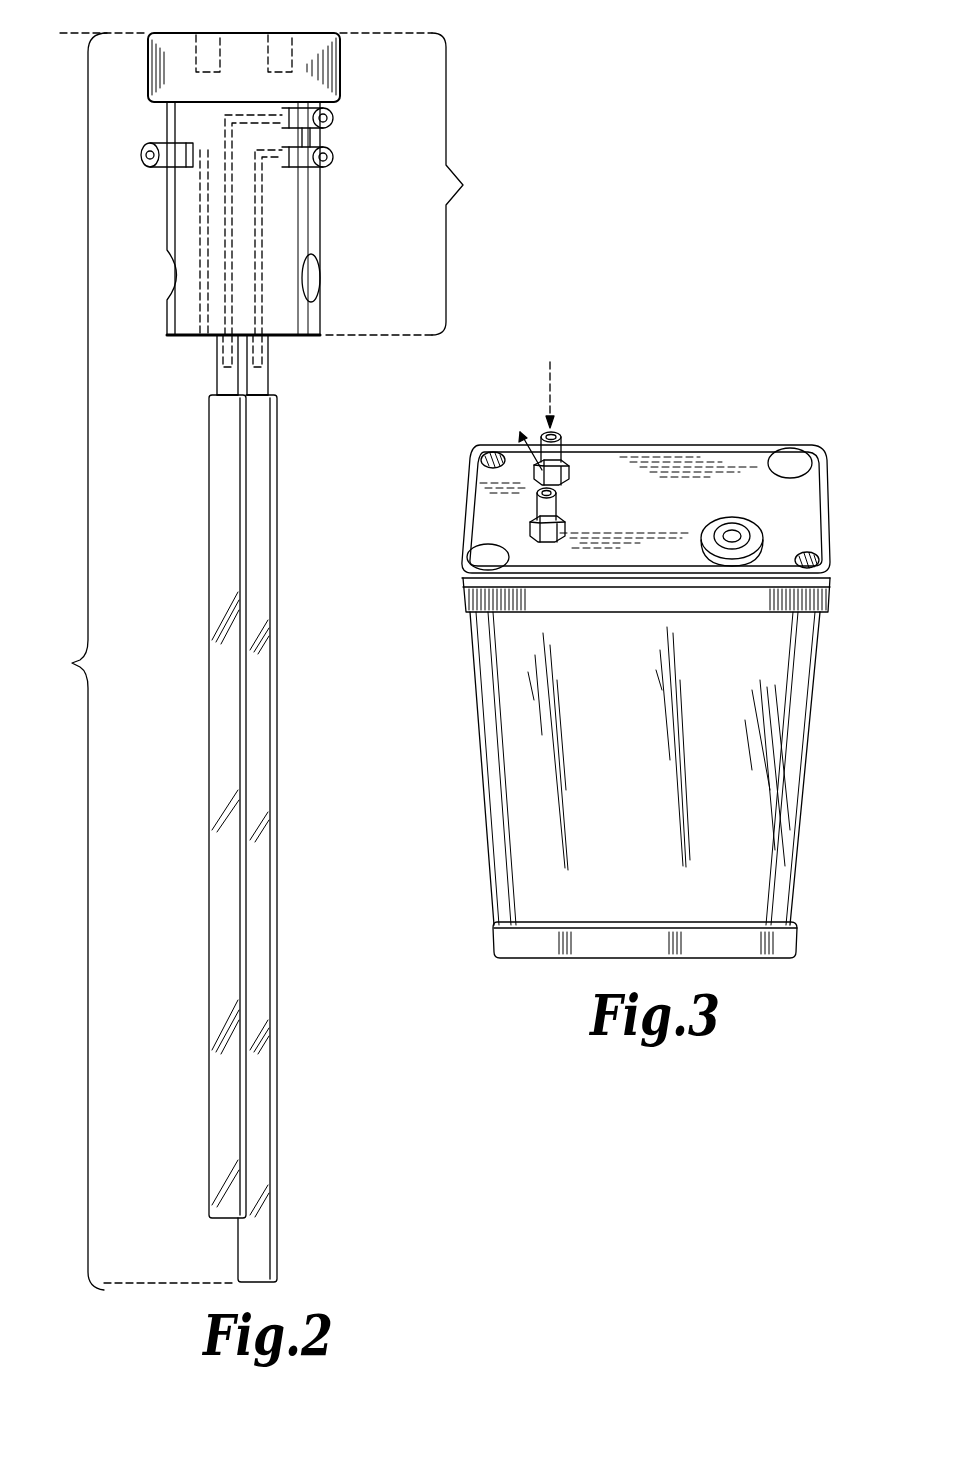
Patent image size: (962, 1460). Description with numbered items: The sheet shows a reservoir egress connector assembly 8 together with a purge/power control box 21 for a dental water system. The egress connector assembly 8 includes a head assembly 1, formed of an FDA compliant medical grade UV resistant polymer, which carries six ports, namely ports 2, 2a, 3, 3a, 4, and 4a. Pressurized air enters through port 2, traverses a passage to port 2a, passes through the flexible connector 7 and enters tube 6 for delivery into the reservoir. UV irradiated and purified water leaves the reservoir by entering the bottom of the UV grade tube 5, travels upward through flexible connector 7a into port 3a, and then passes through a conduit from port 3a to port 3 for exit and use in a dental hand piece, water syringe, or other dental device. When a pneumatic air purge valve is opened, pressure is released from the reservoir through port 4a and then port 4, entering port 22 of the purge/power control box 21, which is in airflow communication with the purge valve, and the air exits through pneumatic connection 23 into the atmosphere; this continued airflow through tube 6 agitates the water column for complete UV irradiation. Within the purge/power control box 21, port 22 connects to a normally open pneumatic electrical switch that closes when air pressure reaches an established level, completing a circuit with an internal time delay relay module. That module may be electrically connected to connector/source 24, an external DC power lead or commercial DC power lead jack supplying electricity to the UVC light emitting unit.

In FIG. 2, the head assembly 1 is at (463, 185).
In FIG. 2, the port 2 is at (333, 118).
In FIG. 2, the port 3 is at (333, 157).
In FIG. 2, the port 4 is at (141, 155).
In FIG. 2, the port 2a is at (226, 338).
In FIG. 2, the port 3a is at (270, 338).
In FIG. 2, the port 4a is at (217, 340).
In FIG. 2, the UV grade tube 5 is at (278, 520).
In FIG. 2, the tube 6 is at (209, 568).
In FIG. 2, the flexible connector 7 is at (228, 378).
In FIG. 2, the flexible connector 7a is at (270, 375).
In FIG. 2, the reservoir egress connector assembly 8 is at (72, 663).
In FIG. 3, the purge/power control box 21 is at (458, 788).
In FIG. 3, the port 22 is at (578, 421).
In FIG. 3, the pneumatic connection 23 is at (517, 518).
In FIG. 3, the connector/source 24 is at (768, 537).